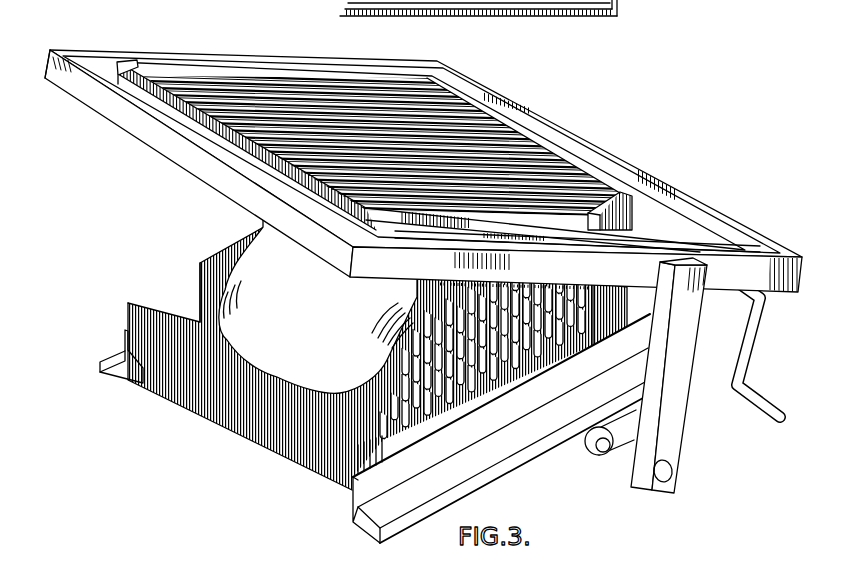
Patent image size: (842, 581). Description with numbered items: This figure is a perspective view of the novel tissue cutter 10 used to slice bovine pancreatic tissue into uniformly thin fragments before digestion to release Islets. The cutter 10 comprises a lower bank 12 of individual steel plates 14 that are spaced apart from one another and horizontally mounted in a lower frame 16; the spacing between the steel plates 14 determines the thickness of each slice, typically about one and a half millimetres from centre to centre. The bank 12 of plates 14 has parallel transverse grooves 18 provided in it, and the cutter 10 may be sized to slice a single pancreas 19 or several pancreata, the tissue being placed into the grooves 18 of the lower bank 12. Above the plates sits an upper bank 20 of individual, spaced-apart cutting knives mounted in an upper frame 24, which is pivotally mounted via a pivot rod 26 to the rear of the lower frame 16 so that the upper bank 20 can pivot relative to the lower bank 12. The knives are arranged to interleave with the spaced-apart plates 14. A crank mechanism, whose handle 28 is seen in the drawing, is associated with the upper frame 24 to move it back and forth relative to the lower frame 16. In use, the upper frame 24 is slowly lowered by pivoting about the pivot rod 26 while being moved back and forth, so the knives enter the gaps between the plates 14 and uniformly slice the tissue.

The tissue cutter 10 is at (440, 380).
The lower bank 12 is at (380, 359).
The steel plates 14 is at (465, 383).
The lower frame 16 is at (502, 461).
The transverse grooves 18 is at (392, 460).
The pancreas 19 is at (322, 316).
The upper bank of cutting knives 20 is at (423, 151).
The upper frame 24 is at (123, 66).
The pivot rod 26 is at (662, 478).
The handle 28 is at (746, 334).